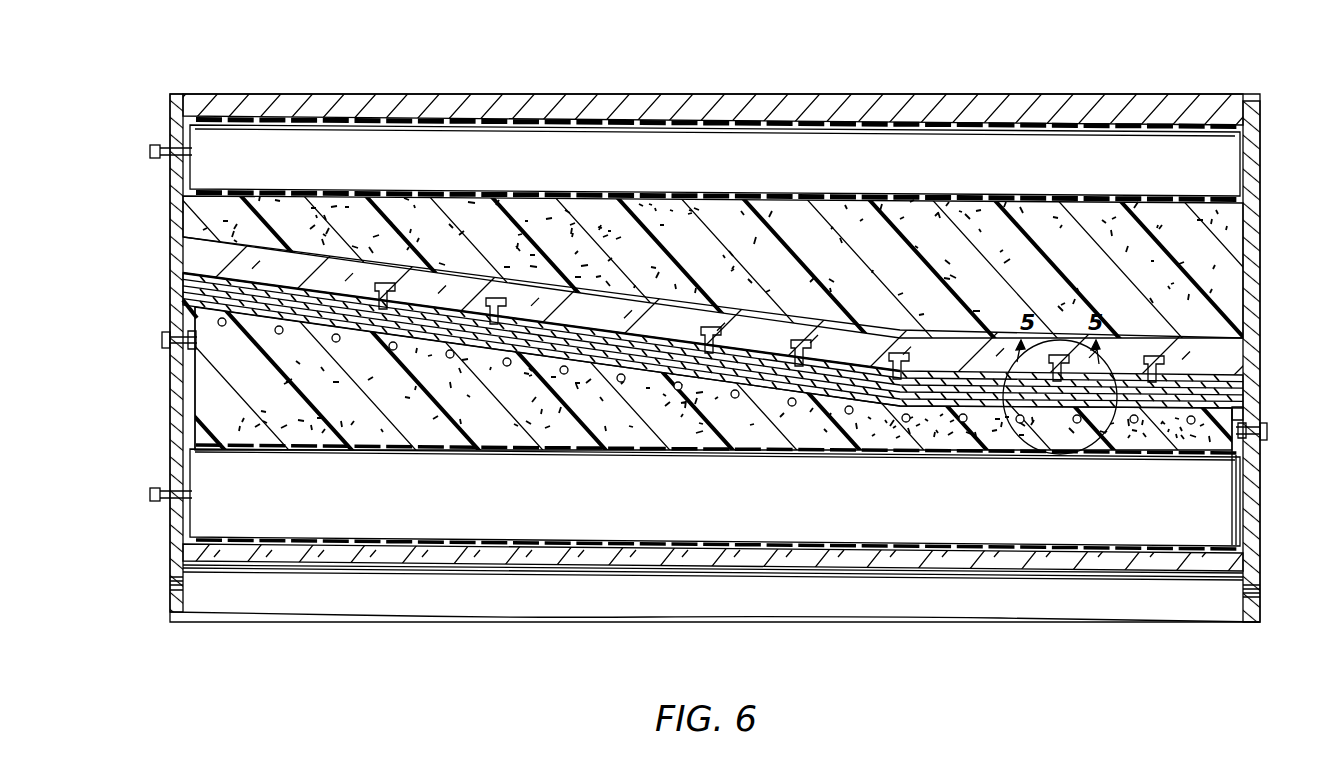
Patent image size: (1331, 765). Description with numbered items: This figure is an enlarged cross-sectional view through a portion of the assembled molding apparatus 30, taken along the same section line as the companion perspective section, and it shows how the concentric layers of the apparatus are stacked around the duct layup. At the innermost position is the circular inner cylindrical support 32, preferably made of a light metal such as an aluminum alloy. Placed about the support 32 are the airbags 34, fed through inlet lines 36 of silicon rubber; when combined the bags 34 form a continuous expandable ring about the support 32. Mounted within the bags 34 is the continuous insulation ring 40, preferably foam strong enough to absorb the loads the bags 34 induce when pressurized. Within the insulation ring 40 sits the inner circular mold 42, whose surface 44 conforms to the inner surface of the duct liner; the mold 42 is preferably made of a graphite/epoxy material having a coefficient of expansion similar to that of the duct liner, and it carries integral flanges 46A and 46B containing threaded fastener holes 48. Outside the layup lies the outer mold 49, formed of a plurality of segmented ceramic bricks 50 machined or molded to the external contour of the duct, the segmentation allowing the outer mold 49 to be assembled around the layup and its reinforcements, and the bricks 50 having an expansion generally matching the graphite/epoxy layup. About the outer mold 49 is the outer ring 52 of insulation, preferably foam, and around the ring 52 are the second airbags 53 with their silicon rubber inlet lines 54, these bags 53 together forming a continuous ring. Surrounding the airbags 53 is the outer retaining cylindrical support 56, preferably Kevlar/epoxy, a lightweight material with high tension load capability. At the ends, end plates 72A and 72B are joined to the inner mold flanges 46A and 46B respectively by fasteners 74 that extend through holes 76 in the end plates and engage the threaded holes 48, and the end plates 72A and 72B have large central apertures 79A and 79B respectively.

The apparatus 30 is at (1190, 80).
The inner cylindrical support 32 is at (432, 572).
The airbags 34 is at (348, 550).
The inlet lines 36 is at (165, 503).
The insulation ring 40 is at (680, 415).
The inner mold 42 is at (755, 408).
The surface 44 is at (965, 412).
The integral flange 46A is at (237, 442).
The integral flange 46B is at (1250, 470).
The threaded fastener holes 48 is at (182, 330).
The outer mold 49 is at (386, 282).
The ceramic bricks 50 is at (470, 275).
The outer ring of insulation 52 is at (795, 206).
The second airbags 53 is at (1035, 116).
The inlet lines 54 is at (172, 147).
The outer retaining cylindrical support 56 is at (1140, 108).
The end plate 72A is at (181, 223).
The end plate 72B is at (1262, 150).
The fasteners 74 is at (178, 353).
The holes 76 is at (164, 345).
The central aperture 79A is at (172, 605).
The central aperture 79B is at (1262, 600).